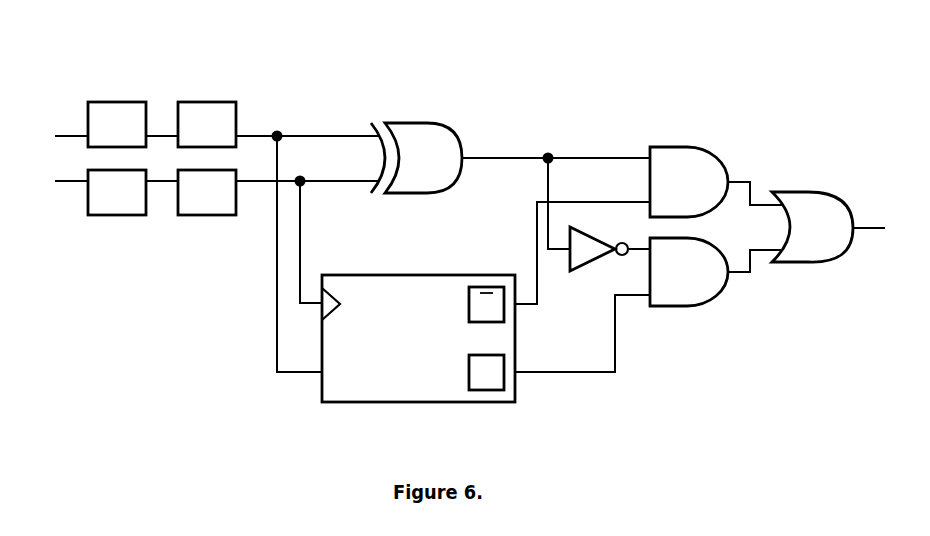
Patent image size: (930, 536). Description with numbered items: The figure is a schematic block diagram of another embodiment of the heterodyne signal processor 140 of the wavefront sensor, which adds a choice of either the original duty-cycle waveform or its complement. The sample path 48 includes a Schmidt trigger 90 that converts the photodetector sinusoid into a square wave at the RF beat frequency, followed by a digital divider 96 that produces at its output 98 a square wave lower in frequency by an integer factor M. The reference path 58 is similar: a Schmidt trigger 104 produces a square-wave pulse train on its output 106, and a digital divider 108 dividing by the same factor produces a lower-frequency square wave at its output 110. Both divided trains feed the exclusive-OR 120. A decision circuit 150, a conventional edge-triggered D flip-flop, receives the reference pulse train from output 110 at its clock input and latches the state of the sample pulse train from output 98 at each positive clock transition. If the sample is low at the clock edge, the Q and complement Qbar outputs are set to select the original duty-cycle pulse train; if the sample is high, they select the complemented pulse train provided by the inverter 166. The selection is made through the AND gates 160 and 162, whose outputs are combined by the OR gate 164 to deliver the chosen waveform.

The path 48 is at (65, 122).
The reference path 58 is at (65, 188).
The Schmidt trigger 90 is at (117, 124).
The digital divider 96 is at (207, 124).
The output 98 is at (265, 134).
The Schmidt trigger 104 is at (117, 192).
The output 106 is at (155, 183).
The digital divider 108 is at (207, 192).
The output 110 is at (255, 183).
The exclusive-OR 120 is at (438, 127).
The heterodyne signal processor 140 is at (557, 85).
The decision circuit 150 is at (418, 338).
The AND gate 160 is at (689, 182).
The AND gate 162 is at (689, 272).
The OR gate 164 is at (825, 190).
The inverter 166 is at (597, 238).